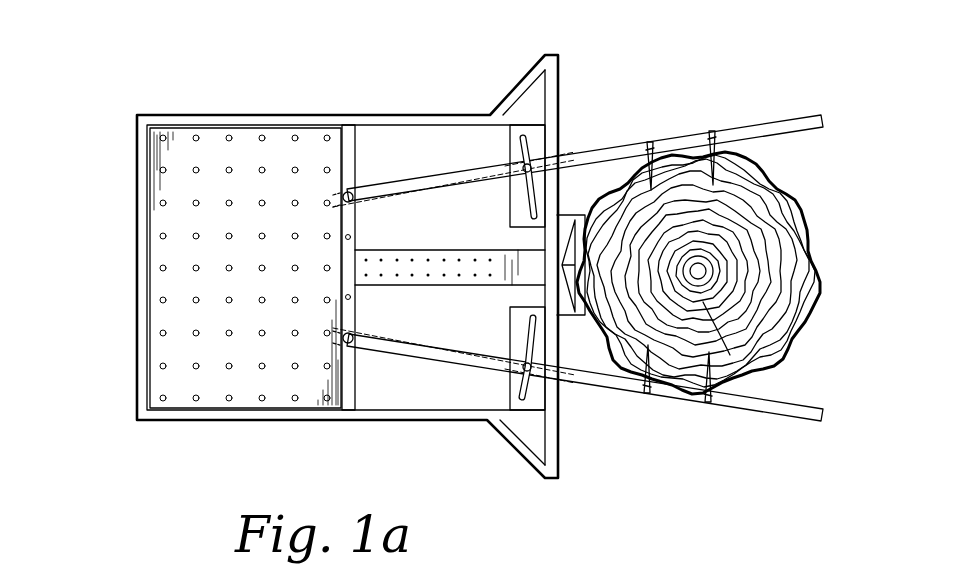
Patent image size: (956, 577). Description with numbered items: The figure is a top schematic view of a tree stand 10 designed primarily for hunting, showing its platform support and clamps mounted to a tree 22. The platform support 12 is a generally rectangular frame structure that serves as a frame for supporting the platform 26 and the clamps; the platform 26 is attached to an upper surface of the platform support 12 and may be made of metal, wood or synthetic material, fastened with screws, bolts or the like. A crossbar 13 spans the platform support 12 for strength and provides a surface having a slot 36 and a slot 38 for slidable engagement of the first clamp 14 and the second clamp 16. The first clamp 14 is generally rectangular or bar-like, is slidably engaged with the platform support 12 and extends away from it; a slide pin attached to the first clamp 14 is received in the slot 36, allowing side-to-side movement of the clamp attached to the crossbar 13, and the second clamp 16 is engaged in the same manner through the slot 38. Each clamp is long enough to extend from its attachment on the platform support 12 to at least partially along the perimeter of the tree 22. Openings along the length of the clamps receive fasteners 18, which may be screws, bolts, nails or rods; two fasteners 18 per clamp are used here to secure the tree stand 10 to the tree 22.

The tree stand 10 is at (74, 80).
The platform support 12 is at (137, 345).
The crossbar 13 is at (342, 147).
The first clamp 14 is at (584, 158).
The second clamp 16 is at (585, 383).
The fasteners 18 is at (737, 160).
The tree 22 is at (787, 226).
The platform 26 is at (180, 277).
The slot 36 is at (523, 138).
The slot 38 is at (527, 397).